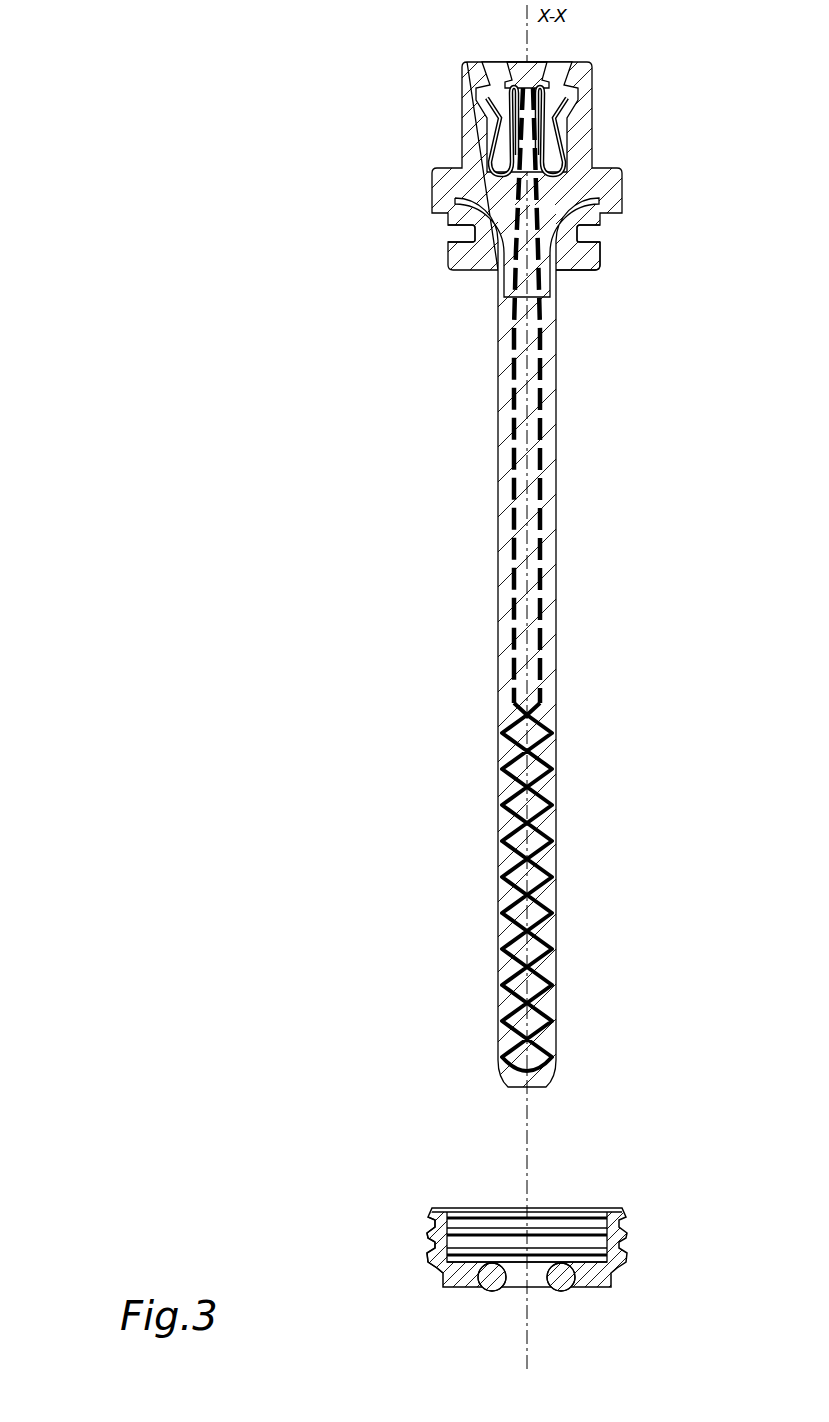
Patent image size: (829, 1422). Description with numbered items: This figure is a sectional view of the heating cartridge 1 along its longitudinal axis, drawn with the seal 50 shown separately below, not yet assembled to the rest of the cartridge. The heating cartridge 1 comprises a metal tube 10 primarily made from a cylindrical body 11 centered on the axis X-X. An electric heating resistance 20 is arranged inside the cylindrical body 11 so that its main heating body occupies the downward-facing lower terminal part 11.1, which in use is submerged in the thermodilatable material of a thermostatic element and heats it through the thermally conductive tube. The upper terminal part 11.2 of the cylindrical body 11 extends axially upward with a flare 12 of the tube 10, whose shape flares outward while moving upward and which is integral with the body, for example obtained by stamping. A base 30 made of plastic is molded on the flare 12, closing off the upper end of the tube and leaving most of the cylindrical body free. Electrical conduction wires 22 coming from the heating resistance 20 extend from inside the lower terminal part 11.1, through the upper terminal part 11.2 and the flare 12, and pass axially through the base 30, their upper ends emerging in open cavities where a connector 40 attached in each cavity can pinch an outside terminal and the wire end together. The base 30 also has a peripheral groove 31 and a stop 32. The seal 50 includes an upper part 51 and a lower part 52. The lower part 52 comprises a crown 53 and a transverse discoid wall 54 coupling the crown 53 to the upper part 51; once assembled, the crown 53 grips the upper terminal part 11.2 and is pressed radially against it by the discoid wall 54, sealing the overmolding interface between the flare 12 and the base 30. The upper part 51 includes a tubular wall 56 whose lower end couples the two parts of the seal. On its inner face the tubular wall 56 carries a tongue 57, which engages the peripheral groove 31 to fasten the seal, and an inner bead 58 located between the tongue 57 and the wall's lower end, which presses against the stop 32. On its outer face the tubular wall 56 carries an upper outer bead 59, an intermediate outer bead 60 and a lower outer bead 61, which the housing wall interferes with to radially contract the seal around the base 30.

The heating cartridge 1 is at (194, 965).
The metal tube 10 is at (478, 776).
The cylindrical body 11 is at (721, 596).
The lower terminal part of the cylindrical body 11.1 is at (557, 927).
The upper terminal part of the cylindrical body 11.2 is at (557, 378).
The flare 12 is at (463, 232).
The electric heating resistance 20 is at (543, 820).
The electrical conduction wires 22 is at (512, 360).
The base 30 is at (452, 127).
The peripheral groove 31 is at (590, 232).
The stop 32 is at (603, 256).
The connector 40 is at (478, 112).
The seal 50 is at (311, 1227).
The upper part of the seal 51 is at (428, 1230).
The lower part of the seal 52 is at (457, 1287).
The crown 53 is at (558, 1289).
The discoid wall 54 is at (597, 1277).
The tubular wall 56 is at (611, 1212).
The tongue 57 is at (598, 1222).
The inner bead 58 is at (573, 1243).
The upper outer bead 59 is at (625, 1218).
The intermediate outer bead 60 is at (625, 1235).
The lower outer bead 61 is at (625, 1252).